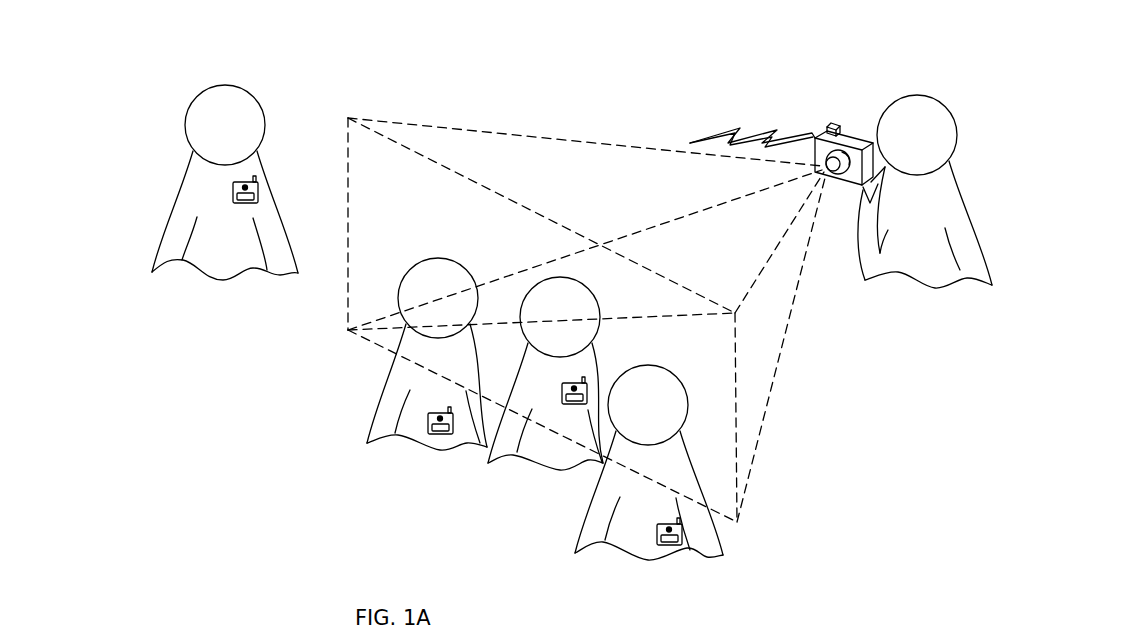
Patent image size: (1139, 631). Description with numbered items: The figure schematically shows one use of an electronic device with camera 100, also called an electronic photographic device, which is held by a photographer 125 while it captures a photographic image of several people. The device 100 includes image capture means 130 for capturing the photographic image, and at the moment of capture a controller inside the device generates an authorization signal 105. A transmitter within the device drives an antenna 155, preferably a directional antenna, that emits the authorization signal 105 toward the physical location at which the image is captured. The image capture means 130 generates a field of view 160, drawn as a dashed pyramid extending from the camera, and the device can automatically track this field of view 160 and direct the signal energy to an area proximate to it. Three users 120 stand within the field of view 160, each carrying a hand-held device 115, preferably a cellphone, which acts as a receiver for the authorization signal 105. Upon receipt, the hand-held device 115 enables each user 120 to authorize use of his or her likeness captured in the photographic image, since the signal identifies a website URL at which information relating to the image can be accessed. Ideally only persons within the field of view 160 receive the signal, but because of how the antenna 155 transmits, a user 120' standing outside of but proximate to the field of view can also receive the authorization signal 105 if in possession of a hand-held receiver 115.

The electronic device with camera 100 is at (852, 100).
The authorization signal 105 is at (737, 130).
The hand-held device 115 is at (260, 189).
The user 120 is at (505, 426).
The user outside the field of view 120' is at (190, 182).
The photographer 125 is at (958, 212).
The image capture means 130 is at (815, 137).
The antenna 155 is at (833, 123).
The field of view 160 is at (708, 318).